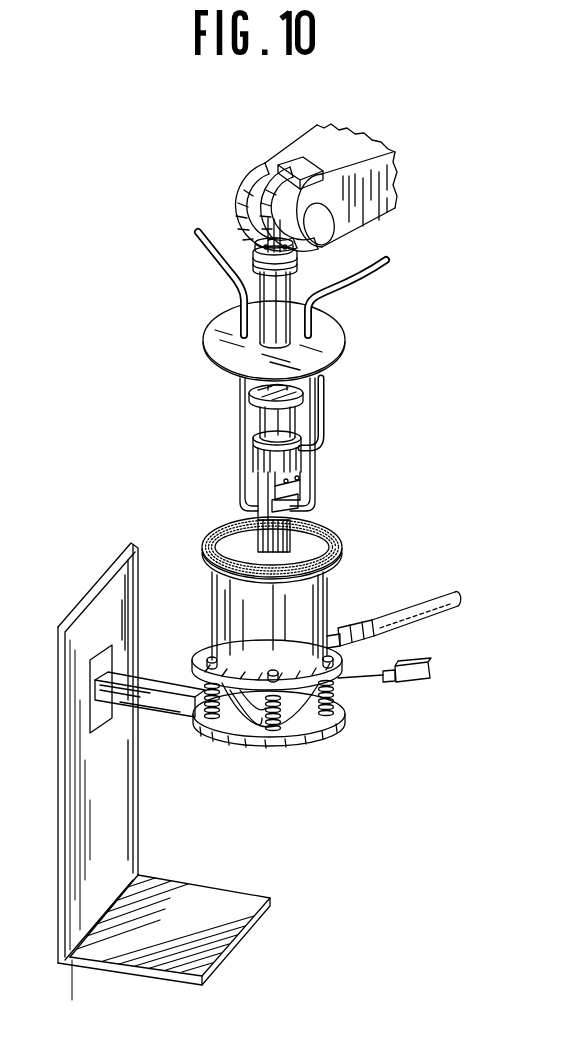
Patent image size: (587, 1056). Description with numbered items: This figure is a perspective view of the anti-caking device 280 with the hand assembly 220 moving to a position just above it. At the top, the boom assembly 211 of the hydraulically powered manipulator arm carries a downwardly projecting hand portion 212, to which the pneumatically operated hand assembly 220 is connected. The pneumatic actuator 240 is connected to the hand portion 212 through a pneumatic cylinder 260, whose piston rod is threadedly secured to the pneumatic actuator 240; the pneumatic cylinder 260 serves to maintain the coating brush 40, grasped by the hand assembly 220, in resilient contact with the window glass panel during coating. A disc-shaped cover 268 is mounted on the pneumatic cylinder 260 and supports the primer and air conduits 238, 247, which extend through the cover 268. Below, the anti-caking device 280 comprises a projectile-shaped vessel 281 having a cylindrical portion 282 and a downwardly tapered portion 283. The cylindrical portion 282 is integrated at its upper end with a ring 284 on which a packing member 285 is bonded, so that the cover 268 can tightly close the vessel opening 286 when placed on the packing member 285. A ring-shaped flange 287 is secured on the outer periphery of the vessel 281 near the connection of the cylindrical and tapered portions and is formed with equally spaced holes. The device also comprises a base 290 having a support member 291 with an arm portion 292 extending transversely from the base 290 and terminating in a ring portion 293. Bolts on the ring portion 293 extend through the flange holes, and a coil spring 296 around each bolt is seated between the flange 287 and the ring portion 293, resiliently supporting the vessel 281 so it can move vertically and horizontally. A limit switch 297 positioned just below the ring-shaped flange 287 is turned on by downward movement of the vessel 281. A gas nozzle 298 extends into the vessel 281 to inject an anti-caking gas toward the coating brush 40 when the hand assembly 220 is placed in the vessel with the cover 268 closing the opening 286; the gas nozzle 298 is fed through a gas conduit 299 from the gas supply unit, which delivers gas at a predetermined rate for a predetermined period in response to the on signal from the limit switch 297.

The boom assembly 211 is at (398, 198).
The hand portion 212 is at (278, 195).
The pneumatic cylinder 260 is at (292, 285).
The disc-shaped cover 268 is at (333, 343).
The air conduit 247 is at (316, 413).
The hand assembly 220 is at (240, 458).
The primer conduit 238 is at (239, 441).
The pneumatic actuator 240 is at (258, 463).
The coating brush 40 is at (300, 525).
The anti-caking device 280 is at (291, 647).
The packing member 285 is at (218, 530).
The vessel opening 286 is at (312, 535).
The ring 284 is at (205, 565).
The cylindrical portion 282 is at (213, 602).
The projectile-shaped vessel 281 is at (333, 588).
The ring-shaped flange 287 is at (207, 646).
The downwardly tapered portion 283 is at (262, 718).
The ring portion 293 is at (318, 727).
The coil spring 296 is at (338, 705).
The support member 291 is at (213, 748).
The gas nozzle 298 is at (338, 628).
The gas conduit 299 is at (413, 617).
The limit switch 297 is at (412, 682).
The arm portion 292 is at (168, 713).
The base 290 is at (130, 840).